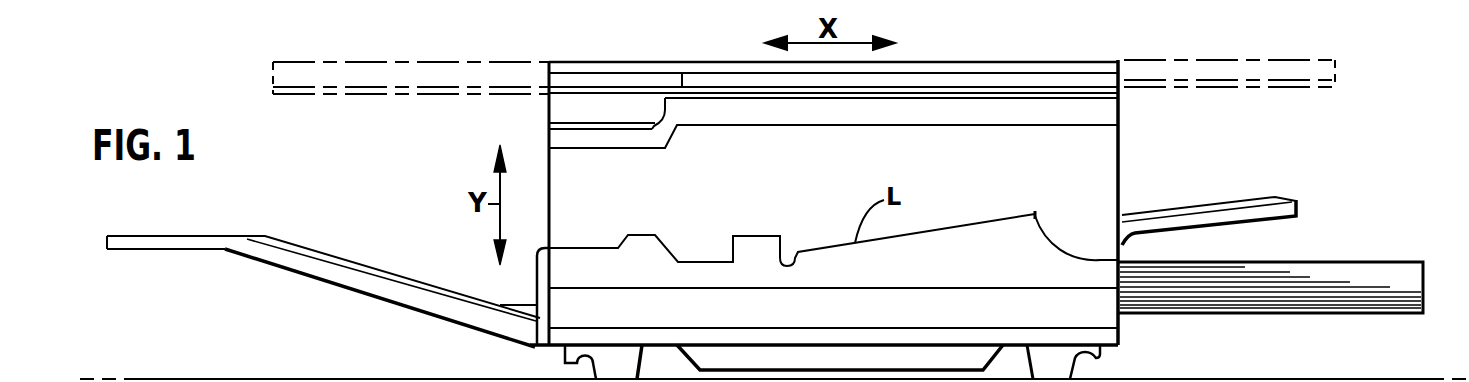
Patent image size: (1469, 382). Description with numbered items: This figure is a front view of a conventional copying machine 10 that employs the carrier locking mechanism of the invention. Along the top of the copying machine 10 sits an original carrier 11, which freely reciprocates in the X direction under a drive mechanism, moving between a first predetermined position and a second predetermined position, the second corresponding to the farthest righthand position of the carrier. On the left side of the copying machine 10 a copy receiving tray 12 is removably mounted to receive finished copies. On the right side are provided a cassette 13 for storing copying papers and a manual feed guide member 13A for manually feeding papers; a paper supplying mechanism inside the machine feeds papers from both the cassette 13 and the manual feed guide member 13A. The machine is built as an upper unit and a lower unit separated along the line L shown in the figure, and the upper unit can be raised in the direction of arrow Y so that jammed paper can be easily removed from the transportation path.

The copying machine 10 is at (1067, 59).
The original carrier 11 is at (958, 61).
The copy receiving tray 12 is at (345, 278).
The cassette 13 is at (1287, 300).
The manual feed guide member 13A is at (1216, 205).